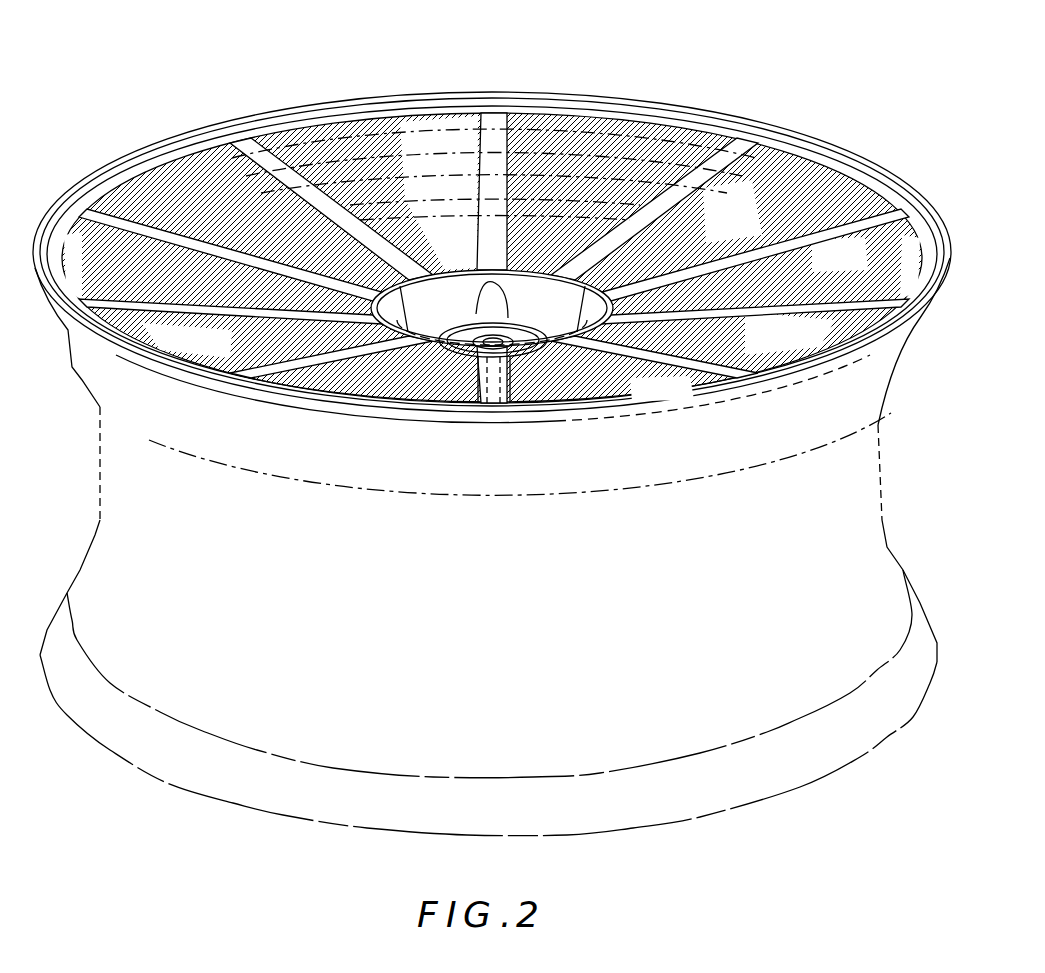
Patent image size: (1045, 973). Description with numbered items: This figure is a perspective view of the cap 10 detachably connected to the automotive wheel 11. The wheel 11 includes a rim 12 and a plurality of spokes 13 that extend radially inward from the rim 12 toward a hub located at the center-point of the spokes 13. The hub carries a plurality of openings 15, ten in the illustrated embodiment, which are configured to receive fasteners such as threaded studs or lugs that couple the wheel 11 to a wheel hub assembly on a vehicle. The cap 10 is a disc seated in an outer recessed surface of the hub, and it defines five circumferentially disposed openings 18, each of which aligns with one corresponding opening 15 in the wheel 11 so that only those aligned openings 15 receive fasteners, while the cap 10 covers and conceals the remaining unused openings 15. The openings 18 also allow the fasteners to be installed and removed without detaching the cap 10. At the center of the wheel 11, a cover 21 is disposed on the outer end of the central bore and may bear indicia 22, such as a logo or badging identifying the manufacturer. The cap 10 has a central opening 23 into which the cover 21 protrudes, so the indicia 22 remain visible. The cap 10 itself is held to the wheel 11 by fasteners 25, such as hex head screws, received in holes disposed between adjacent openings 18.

The cap 10 is at (545, 300).
The automotive wheel 11 is at (821, 97).
The rim 12 is at (193, 133).
The spokes 13 is at (340, 197).
The openings 15 is at (493, 340).
The openings 18 is at (400, 287).
The cover 21 is at (522, 345).
The indicia 22 is at (493, 358).
The central opening 23 is at (512, 300).
The fasteners 25 is at (458, 333).